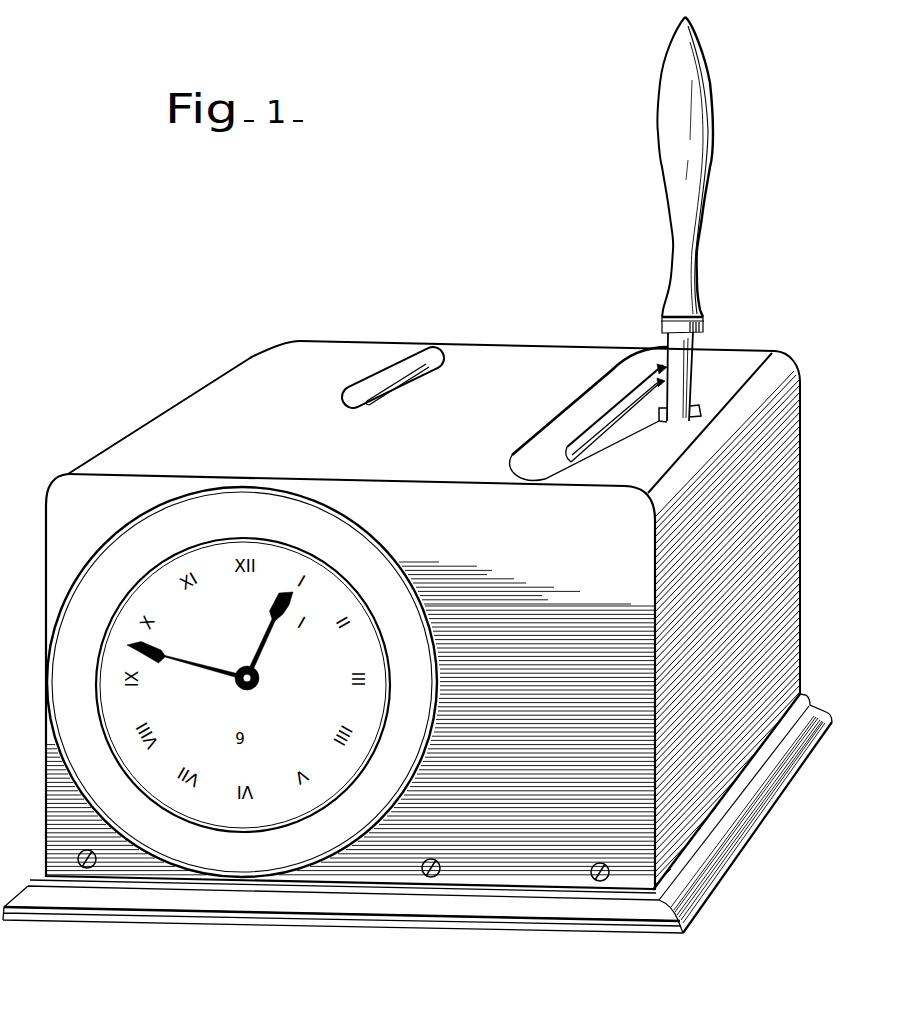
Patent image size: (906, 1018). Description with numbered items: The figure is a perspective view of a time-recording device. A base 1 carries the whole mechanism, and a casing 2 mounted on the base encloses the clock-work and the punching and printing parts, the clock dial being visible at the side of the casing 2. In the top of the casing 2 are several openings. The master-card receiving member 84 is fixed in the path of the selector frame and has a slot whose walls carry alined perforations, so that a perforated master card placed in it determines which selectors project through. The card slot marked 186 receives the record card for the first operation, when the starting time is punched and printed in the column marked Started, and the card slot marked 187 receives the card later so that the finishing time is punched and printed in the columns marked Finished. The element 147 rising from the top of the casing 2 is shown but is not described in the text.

The base 1 is at (408, 902).
The casing 2 is at (306, 364).
The master-card receiving member 84 is at (401, 372).
The letter opener 147 is at (670, 163).
The card slot 186 is at (638, 402).
The card slot 187 is at (600, 420).